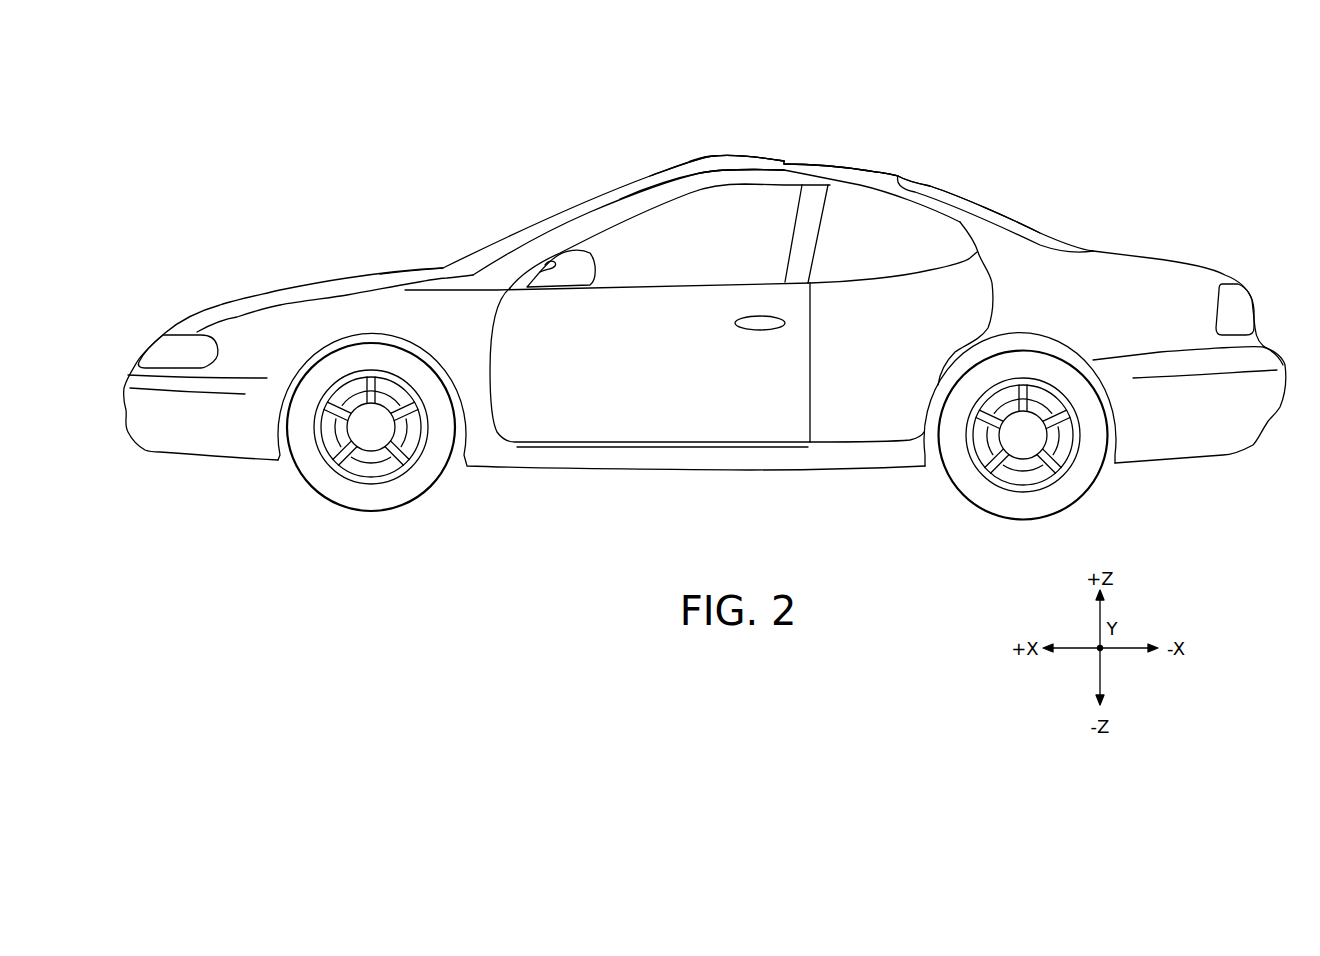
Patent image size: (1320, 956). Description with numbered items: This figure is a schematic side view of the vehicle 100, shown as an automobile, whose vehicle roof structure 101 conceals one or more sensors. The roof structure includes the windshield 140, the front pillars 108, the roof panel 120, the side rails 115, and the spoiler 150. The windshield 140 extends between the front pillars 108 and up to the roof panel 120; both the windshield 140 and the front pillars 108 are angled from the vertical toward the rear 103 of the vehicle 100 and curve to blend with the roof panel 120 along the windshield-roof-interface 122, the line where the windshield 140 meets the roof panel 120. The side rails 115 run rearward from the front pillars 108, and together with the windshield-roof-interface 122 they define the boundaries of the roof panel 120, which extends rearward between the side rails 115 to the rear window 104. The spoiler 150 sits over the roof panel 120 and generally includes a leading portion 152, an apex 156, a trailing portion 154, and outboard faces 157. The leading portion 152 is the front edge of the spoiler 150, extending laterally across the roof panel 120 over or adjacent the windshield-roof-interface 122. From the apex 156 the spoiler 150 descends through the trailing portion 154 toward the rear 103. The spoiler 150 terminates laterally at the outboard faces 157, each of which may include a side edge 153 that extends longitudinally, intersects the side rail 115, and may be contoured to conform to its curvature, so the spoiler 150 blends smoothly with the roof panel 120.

The vehicle 100 is at (380, 158).
The vehicle roof structure 101 is at (752, 107).
The rear 103 is at (1077, 169).
The rear window 104 is at (974, 206).
The front pillars 108 is at (562, 236).
The side rails 115 is at (801, 193).
The roof panel 120 is at (802, 154).
The windshield-roof-interface 122 is at (650, 204).
The windshield 140 is at (563, 206).
The spoiler 150 is at (675, 140).
The leading portion 152 is at (652, 217).
The side edge 153 is at (700, 180).
The trailing portion 154 is at (779, 162).
The apex 156 is at (702, 156).
The outboard faces 157 is at (715, 160).